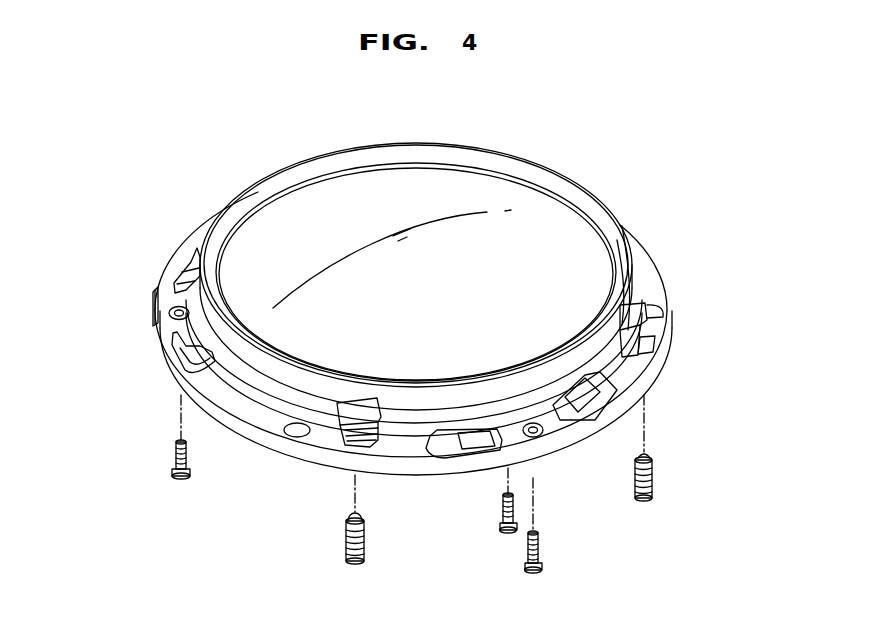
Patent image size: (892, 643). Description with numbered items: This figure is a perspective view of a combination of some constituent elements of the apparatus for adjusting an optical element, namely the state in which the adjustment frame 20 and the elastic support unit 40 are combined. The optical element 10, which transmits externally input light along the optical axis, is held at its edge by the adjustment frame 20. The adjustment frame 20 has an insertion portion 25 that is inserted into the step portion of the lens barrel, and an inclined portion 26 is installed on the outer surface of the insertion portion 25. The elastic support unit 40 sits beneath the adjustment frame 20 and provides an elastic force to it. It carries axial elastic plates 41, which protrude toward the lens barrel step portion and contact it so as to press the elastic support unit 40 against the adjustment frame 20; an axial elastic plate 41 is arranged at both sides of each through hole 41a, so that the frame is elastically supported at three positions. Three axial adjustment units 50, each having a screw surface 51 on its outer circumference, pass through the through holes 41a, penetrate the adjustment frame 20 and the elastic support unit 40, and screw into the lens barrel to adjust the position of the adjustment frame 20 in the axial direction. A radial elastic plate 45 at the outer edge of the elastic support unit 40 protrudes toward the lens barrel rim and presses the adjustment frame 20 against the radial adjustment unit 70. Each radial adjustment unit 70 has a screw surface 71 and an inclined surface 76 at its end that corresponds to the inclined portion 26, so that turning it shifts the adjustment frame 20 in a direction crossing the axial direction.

The optical element 10 is at (490, 197).
The adjustment frame 20 is at (591, 191).
The insertion portion 25 is at (623, 228).
The inclined portion 26 is at (357, 403).
The elastic support unit 40 is at (268, 437).
The axial elastic plate 41 is at (465, 435).
The through hole 41a is at (540, 420).
The radial elastic plate 45 is at (157, 300).
The axial adjustment unit 50 is at (176, 459).
The screw surface 51 is at (540, 544).
The radial adjustment unit 70 is at (370, 558).
The screw surface 71 is at (346, 549).
The inclined surface 76 is at (348, 516).